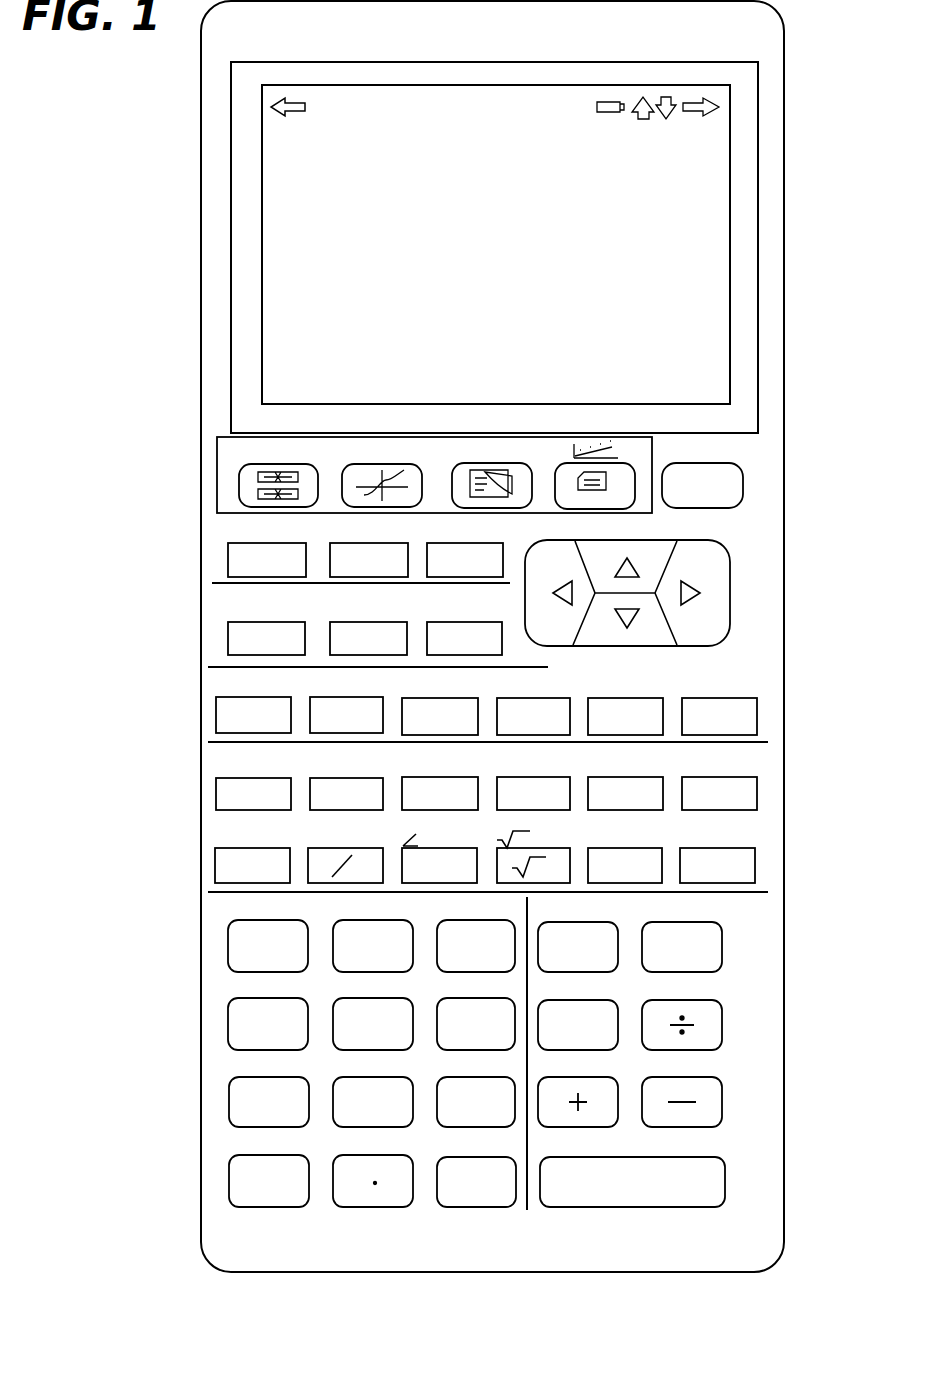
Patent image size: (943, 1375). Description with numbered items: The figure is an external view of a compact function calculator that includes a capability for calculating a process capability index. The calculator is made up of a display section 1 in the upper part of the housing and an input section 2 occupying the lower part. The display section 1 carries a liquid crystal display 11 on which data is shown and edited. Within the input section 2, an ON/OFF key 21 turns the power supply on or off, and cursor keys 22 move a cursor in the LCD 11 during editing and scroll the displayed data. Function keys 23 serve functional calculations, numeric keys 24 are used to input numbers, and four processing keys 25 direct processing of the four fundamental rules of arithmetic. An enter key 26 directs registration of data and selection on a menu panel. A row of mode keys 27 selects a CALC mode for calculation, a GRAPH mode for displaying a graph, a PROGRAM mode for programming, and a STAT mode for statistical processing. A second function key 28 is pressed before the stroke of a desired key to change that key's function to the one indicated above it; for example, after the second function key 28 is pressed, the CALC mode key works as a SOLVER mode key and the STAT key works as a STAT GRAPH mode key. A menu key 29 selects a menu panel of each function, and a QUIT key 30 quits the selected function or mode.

The display section 1 is at (100, 44).
The input section 2 is at (100, 437).
The liquid crystal display 11 is at (760, 226).
The ON/OFF key 21 is at (736, 499).
The cursor keys 22 is at (717, 617).
The function keys 23 is at (803, 757).
The numeric keys 24 is at (175, 897).
The four processing keys 25 is at (803, 895).
The enter key 26 is at (672, 1208).
The mode keys 27 is at (216, 475).
The second function key 28 is at (216, 721).
The menu key 29 is at (408, 636).
The QUIT key 30 is at (505, 641).